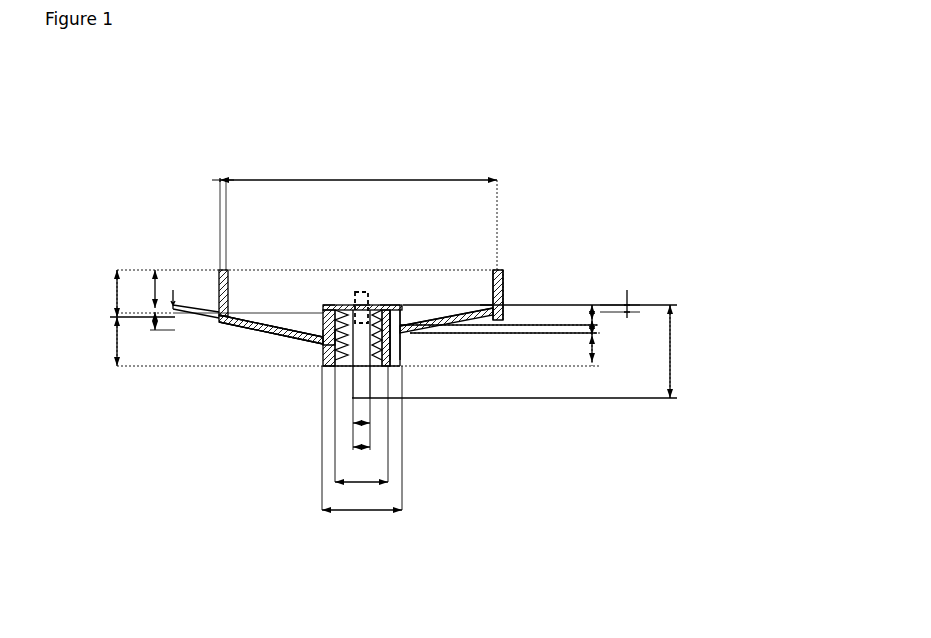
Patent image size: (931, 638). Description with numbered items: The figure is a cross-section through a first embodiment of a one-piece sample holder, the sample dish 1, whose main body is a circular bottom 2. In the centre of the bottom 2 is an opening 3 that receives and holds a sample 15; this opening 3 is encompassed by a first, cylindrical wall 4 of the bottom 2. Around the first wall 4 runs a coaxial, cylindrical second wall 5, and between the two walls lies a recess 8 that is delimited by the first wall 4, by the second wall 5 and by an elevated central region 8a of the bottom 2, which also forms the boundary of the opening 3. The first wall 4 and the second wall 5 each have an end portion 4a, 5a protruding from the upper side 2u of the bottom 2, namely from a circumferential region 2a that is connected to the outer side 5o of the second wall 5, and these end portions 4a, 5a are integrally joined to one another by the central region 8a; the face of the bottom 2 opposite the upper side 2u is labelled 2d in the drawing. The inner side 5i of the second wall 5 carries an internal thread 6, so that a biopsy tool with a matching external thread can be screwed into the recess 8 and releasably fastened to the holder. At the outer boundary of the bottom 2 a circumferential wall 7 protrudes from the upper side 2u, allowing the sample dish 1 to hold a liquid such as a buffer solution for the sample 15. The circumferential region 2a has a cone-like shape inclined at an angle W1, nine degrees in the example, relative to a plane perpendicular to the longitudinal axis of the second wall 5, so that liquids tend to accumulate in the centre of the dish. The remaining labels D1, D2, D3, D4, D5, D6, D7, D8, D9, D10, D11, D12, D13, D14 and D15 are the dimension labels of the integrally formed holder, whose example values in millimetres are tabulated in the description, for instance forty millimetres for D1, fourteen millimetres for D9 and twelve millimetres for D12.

The sample dish 1 is at (412, 298).
The circular bottom 2 is at (246, 303).
The upper side of the bottom 2u is at (233, 312).
The lower surface of plate 2d is at (315, 322).
The circumferential region of the bottom 2a is at (410, 316).
The opening 3 is at (356, 322).
The first circumferential wall 4 is at (350, 350).
The end portion of the first wall 4a is at (345, 306).
The second circumferential wall 5 is at (320, 340).
The end portion of the second wall 5a is at (325, 306).
The inner side of the second wall 5i is at (400, 343).
The outer side of the second wall 5o is at (398, 346).
The thread 6 is at (367, 323).
The circumferential wall 7 is at (505, 300).
The recess 8 is at (445, 282).
The central region of the bottom 8a is at (390, 297).
The sample 15 is at (360, 292).
The dimension D1 is at (365, 180).
The dimension D2 is at (223, 182).
The dimension D3 is at (117, 285).
The dimension D4 is at (117, 345).
The dimension D5 is at (153, 310).
The dimension D6 is at (153, 290).
The dimension D7 is at (592, 312).
The dimension D8 is at (627, 303).
The dimension D9 is at (669, 367).
The dimension D10 is at (593, 327).
The dimension D11 is at (593, 353).
The dimension D12 is at (332, 512).
The dimension D13 is at (374, 487).
The dimension D14 is at (352, 447).
The dimension D15 is at (352, 423).
The angle W1 is at (175, 300).